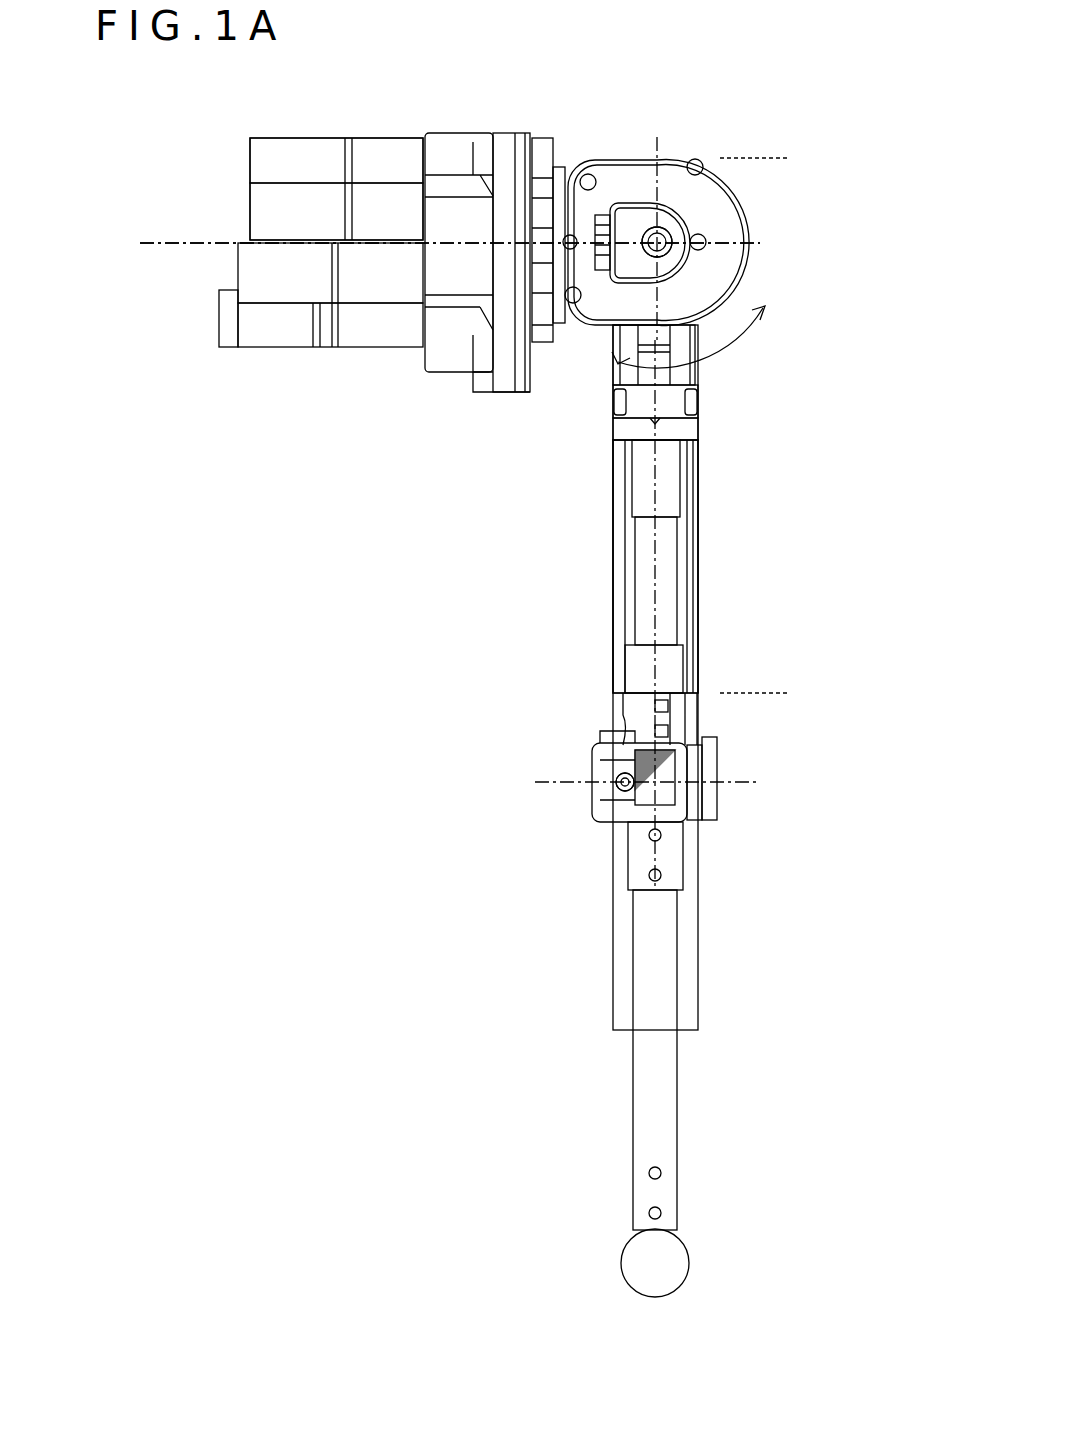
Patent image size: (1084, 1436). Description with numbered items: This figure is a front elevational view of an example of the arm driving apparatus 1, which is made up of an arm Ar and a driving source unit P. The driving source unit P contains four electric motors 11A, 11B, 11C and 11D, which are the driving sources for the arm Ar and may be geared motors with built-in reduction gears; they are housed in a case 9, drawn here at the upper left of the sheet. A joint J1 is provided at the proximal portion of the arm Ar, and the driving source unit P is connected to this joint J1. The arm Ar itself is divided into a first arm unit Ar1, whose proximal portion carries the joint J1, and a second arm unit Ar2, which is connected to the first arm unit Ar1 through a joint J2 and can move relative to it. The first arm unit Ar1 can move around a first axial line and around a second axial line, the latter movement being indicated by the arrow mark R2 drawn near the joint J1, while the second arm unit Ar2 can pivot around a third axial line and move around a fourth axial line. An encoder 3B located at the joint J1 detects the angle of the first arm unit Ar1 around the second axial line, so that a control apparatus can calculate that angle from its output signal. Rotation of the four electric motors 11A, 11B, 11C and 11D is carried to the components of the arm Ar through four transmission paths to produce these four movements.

The arm driving apparatus 1 is at (780, 118).
The driving source unit P is at (553, 104).
The case 9 is at (452, 373).
The electric motor 11A is at (250, 166).
The electric motor 11B is at (250, 214).
The electric motor 11C is at (238, 274).
The electric motor 11D is at (222, 322).
The joint J1 is at (676, 152).
The joint J2 is at (590, 814).
The encoder 3B is at (628, 225).
The arrow mark R2 is at (720, 352).
The arm Ar is at (862, 432).
The first arm unit Ar1 is at (790, 160).
The second arm unit Ar2 is at (790, 693).